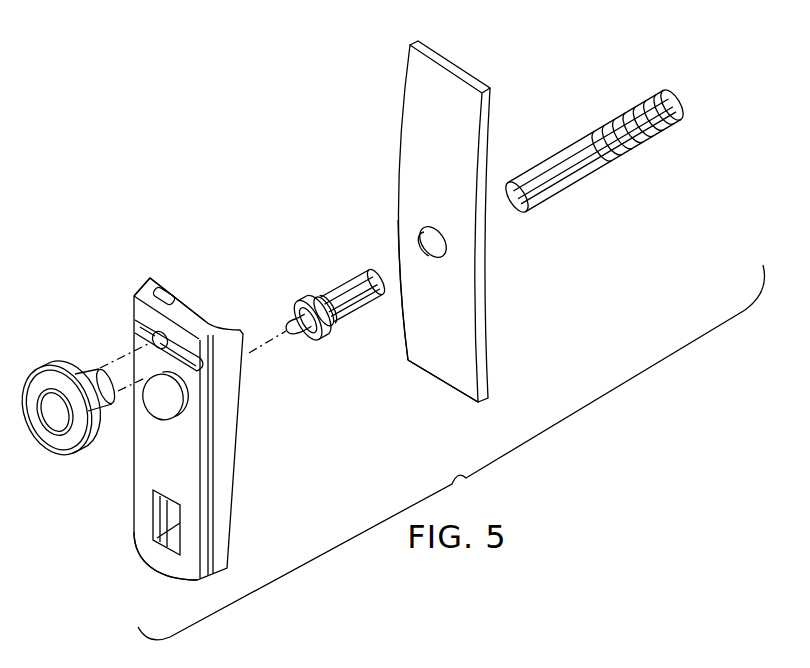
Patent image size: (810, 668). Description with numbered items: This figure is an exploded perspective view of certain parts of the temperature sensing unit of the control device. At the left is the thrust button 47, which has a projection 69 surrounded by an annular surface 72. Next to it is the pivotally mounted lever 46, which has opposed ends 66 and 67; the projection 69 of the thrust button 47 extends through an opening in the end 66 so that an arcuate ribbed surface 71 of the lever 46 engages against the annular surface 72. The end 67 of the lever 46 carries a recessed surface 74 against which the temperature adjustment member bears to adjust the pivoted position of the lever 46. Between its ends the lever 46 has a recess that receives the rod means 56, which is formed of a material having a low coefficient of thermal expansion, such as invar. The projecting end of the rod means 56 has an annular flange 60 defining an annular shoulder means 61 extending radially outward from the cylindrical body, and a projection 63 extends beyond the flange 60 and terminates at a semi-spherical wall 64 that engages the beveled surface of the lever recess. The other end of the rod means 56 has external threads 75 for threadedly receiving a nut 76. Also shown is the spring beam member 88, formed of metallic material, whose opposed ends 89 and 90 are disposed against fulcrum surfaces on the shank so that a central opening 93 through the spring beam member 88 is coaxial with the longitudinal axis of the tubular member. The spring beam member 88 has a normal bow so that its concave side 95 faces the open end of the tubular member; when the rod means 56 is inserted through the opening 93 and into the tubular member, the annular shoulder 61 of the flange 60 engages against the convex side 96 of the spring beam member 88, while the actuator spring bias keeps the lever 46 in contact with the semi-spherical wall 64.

The lever 46 is at (147, 471).
The thrust button 47 is at (68, 368).
The rod means 56 is at (568, 184).
The annular flange 60 is at (308, 292).
The annular shoulder means 61 is at (337, 323).
The projection 63 is at (305, 331).
The semi-spherical wall 64 is at (287, 330).
The end of lever 66 is at (145, 285).
The end of lever 67 is at (165, 568).
The projection of thrust button 69 is at (97, 382).
The arcuate ribbed surface 71 is at (203, 400).
The annular surface 72 is at (95, 418).
The recessed surface 74 is at (168, 526).
The external threads 75 is at (635, 103).
The nut 76 is at (170, 343).
The spring beam member 88 is at (415, 125).
The end of spring beam member 89 is at (443, 63).
The end of spring beam member 90 is at (453, 387).
The central opening 93 is at (428, 232).
The concave side 95 is at (482, 292).
The convex side 96 is at (425, 337).